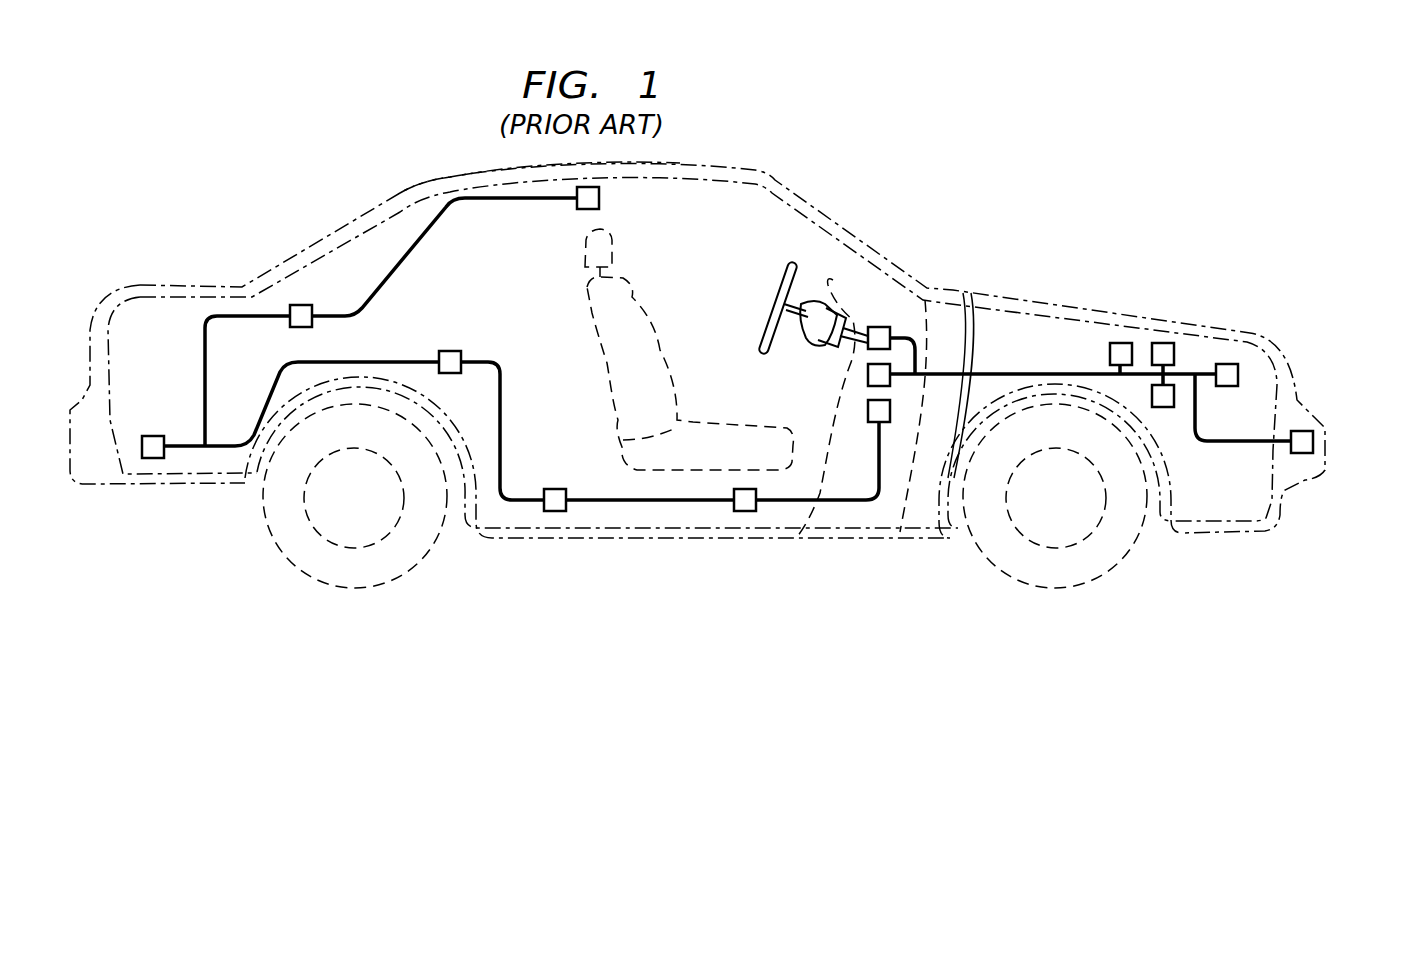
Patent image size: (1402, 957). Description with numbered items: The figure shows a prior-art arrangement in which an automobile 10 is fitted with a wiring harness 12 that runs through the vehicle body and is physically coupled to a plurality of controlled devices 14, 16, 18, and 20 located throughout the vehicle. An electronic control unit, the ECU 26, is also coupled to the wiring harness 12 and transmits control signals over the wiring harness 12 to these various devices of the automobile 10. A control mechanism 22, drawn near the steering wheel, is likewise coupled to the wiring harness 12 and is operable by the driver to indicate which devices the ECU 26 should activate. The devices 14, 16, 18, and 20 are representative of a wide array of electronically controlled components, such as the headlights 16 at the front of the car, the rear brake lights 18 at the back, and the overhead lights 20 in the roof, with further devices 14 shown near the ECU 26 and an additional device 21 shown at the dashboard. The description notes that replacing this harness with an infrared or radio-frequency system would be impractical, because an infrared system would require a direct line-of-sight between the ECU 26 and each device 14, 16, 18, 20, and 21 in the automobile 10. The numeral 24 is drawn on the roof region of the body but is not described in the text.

The automobile 10 is at (1016, 203).
The wiring harness 12 is at (405, 256).
The controlled device 14 is at (1163, 343).
The headlights 16 is at (1331, 452).
The rear brake lights 18 is at (152, 436).
The overhead lights 20 is at (600, 198).
The device 21 is at (867, 377).
The control mechanism 22 is at (880, 326).
The vehicle body / roof 24 is at (371, 207).
The electronic control unit (ECU) 26 is at (1121, 343).